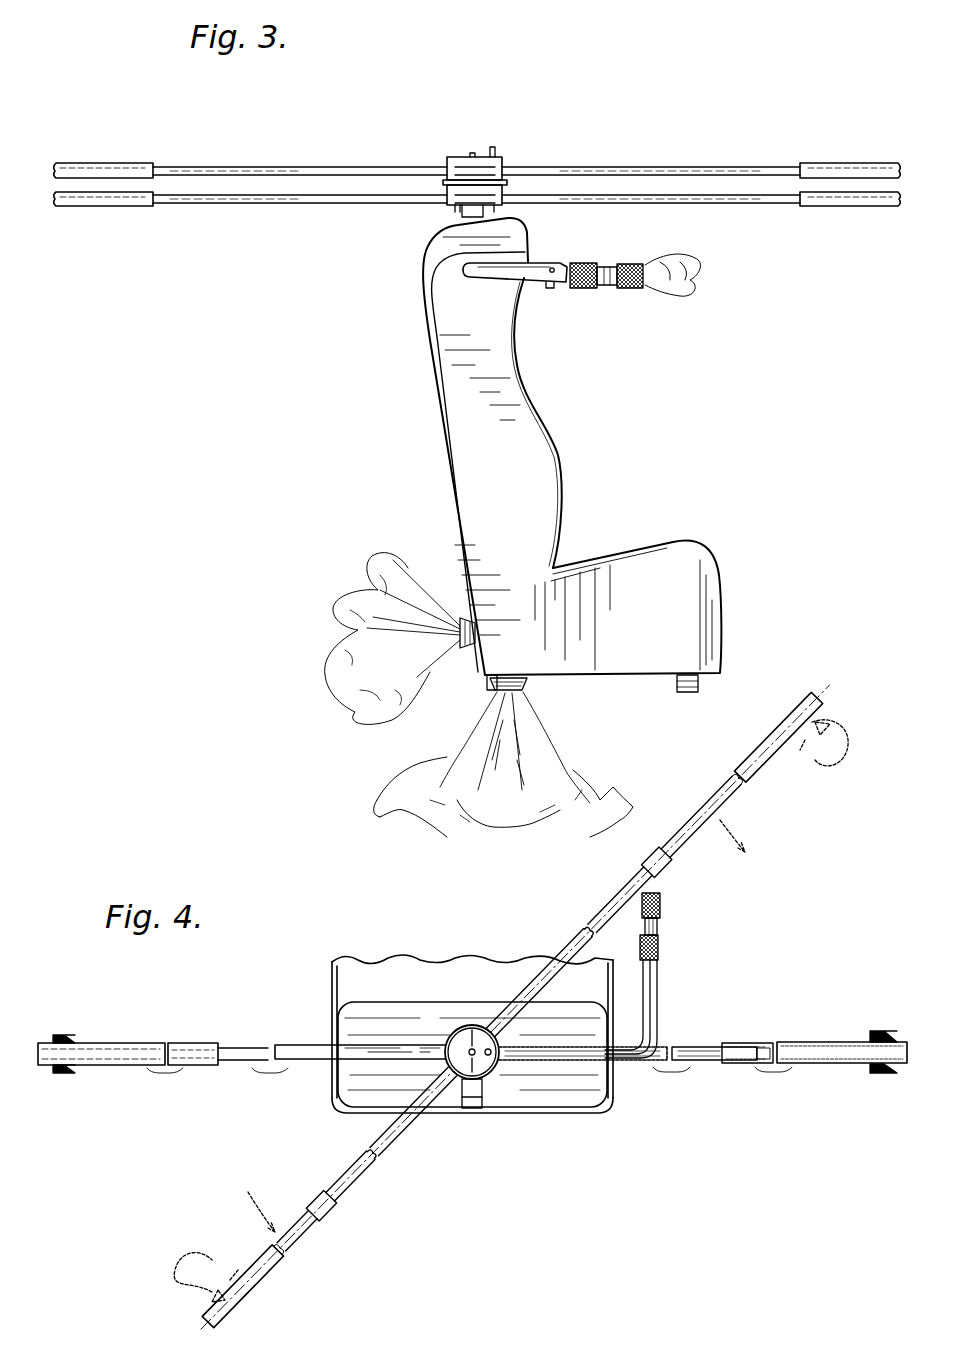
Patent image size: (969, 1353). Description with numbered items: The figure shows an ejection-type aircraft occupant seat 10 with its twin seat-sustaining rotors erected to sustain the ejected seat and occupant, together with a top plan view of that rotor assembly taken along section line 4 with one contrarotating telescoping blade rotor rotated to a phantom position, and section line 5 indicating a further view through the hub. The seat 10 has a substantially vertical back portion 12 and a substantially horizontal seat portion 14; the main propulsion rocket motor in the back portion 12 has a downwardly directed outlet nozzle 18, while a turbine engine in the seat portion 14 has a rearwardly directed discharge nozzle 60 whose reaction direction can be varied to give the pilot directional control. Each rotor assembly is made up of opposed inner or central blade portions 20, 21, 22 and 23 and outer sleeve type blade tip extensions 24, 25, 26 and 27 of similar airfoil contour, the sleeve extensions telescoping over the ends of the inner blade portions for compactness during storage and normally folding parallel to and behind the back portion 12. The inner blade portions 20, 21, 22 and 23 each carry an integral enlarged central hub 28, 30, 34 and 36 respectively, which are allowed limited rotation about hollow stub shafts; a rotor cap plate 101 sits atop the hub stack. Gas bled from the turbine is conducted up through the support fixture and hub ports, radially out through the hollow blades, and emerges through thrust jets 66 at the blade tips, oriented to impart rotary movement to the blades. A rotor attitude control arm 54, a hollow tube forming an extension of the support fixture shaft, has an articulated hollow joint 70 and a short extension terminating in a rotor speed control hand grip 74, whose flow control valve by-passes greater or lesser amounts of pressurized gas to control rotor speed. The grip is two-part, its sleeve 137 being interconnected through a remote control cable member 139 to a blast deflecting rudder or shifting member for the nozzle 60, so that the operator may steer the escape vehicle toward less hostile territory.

In FIG. 3, the section line 4- 4 is at (128, 125).
In FIG. 4, the section line 5- 5 is at (388, 1062).
In FIG. 3, the ejection-type aircraft occupant seat 10 is at (410, 410).
In FIG. 3, the back portion 12 is at (503, 444).
In FIG. 3, the seat portion 14 is at (662, 622).
In FIG. 3, the outlet nozzle 18 is at (528, 684).
In FIG. 3, the inner blade portion 20 is at (318, 166).
In FIG. 4, the inner blade portion 20 is at (312, 1044).
In FIG. 3, the inner blade portion 21 is at (675, 166).
In FIG. 4, the inner blade portion 21 is at (710, 1062).
In FIG. 3, the inner blade portion 22 is at (306, 203).
In FIG. 4, the inner blade portion 22 is at (352, 1166).
In FIG. 3, the inner blade portion 23 is at (700, 203).
In FIG. 4, the inner blade portion 23 is at (592, 922).
In FIG. 3, the sleeve type blade tip extension 24 is at (132, 166).
In FIG. 4, the sleeve type blade tip extension 24 is at (208, 1042).
In FIG. 3, the sleeve type blade tip extension 25 is at (840, 164).
In FIG. 4, the sleeve type blade tip extension 25 is at (825, 1042).
In FIG. 3, the sleeve type blade tip extension 26 is at (120, 199).
In FIG. 4, the sleeve type blade tip extension 26 is at (266, 1278).
In FIG. 3, the sleeve type blade tip extension 27 is at (842, 206).
In FIG. 4, the sleeve type blade tip extension 27 is at (758, 772).
In FIG. 3, the central hub 28 is at (462, 166).
In FIG. 3, the central hub 30 is at (497, 157).
In FIG. 3, the central hub 34 is at (448, 200).
In FIG. 3, the central hub 36 is at (505, 198).
In FIG. 3, the rotor attitude control arm 54 is at (472, 284).
In FIG. 3, the discharge nozzle 60 is at (468, 652).
In FIG. 4, the thrust jets 66 is at (70, 1040).
In FIG. 3, the articulated hollow joint 70 is at (546, 280).
In FIG. 3, the rotor speed control hand grip 74 is at (628, 263).
In FIG. 4, the rotor speed control hand grip 74 is at (662, 905).
In FIG. 4, the rotor cap plate 101 is at (492, 1075).
In FIG. 3, the sleeve 137 is at (585, 290).
In FIG. 4, the sleeve 137 is at (660, 948).
In FIG. 3, the remote control cable member 139 is at (445, 455).
In FIG. 4, the remote control cable member 139 is at (658, 996).